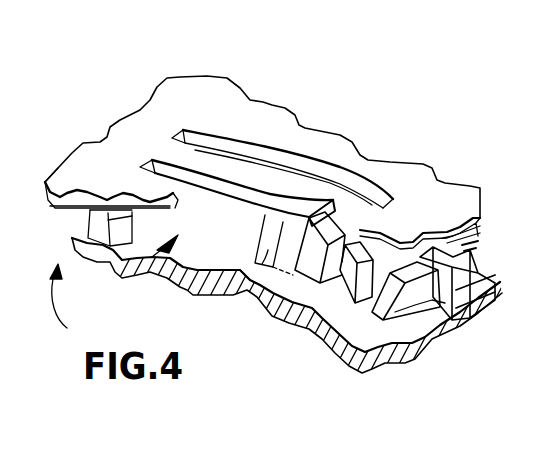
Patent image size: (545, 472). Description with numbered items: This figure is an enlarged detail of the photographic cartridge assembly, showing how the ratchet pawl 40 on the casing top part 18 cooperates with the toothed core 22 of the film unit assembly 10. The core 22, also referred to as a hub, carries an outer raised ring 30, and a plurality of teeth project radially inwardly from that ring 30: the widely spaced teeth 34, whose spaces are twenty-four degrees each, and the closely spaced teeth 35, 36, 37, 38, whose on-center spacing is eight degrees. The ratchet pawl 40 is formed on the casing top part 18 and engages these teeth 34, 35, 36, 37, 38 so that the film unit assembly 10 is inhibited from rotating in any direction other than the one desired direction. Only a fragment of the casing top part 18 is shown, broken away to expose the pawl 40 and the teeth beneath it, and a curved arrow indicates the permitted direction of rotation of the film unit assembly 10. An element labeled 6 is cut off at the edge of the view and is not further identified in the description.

The workpiece 6 is at (29, 143).
The film unit assembly 10 is at (75, 303).
The casing top part 18 is at (233, 100).
The core 22 is at (147, 262).
The outer raised ring 30 is at (485, 268).
The widely spaced teeth 34 is at (113, 268).
The closely spaced tooth 35 is at (253, 296).
The closely spaced tooth 36 is at (310, 275).
The closely spaced tooth 37 is at (355, 279).
The closely spaced tooth 38 is at (402, 303).
The ratchet pawl 40 is at (295, 190).